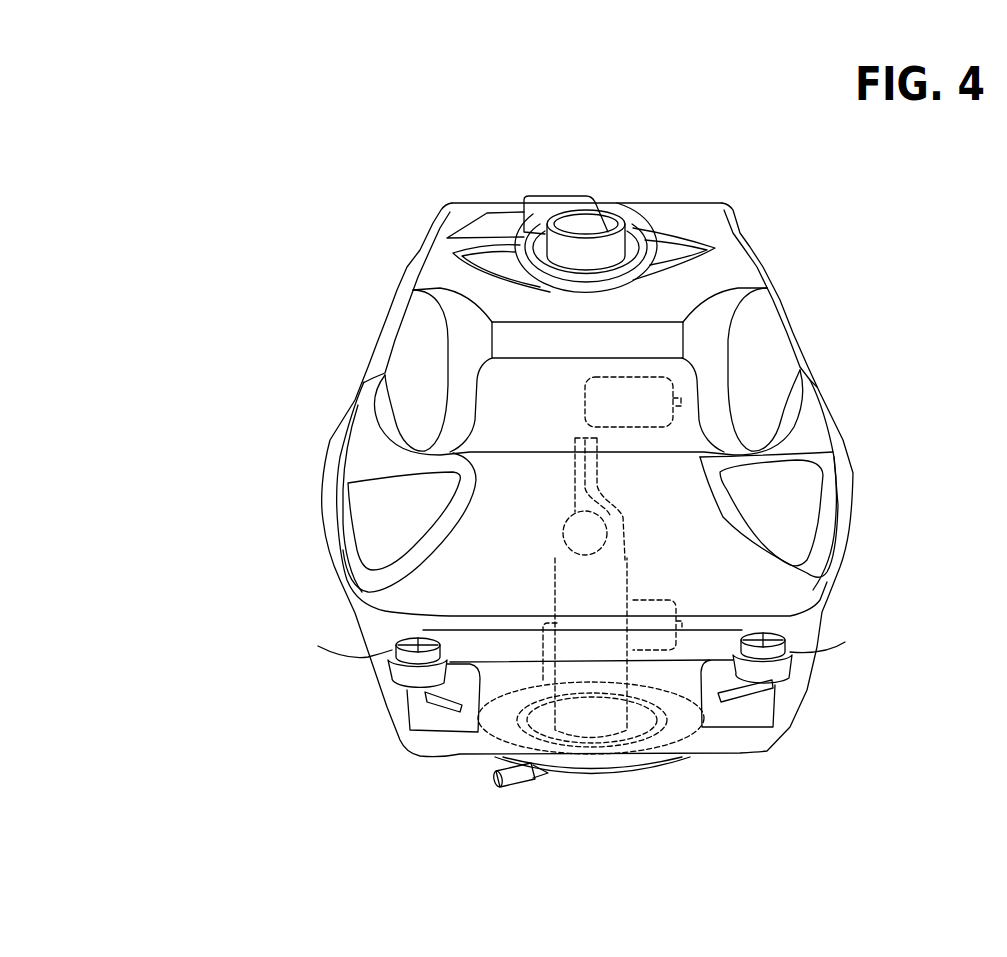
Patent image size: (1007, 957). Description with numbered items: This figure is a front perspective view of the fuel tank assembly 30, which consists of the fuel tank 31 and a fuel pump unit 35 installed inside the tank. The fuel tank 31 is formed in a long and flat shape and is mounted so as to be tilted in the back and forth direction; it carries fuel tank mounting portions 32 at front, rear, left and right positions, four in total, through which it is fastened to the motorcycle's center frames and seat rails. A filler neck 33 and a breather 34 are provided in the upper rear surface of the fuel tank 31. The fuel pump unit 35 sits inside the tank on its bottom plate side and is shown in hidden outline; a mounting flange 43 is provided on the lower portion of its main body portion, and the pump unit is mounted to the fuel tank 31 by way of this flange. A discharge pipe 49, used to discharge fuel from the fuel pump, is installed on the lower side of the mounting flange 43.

The fuel tank assembly 30 is at (210, 373).
The fuel tank 31 is at (363, 368).
The fuel tank mounting portions 32 is at (396, 646).
The filler neck 33 is at (603, 207).
The breather 34 is at (545, 197).
The fuel pump unit 35 is at (557, 535).
The mounting flange 43 is at (642, 773).
The discharge pipe 49 is at (517, 788).